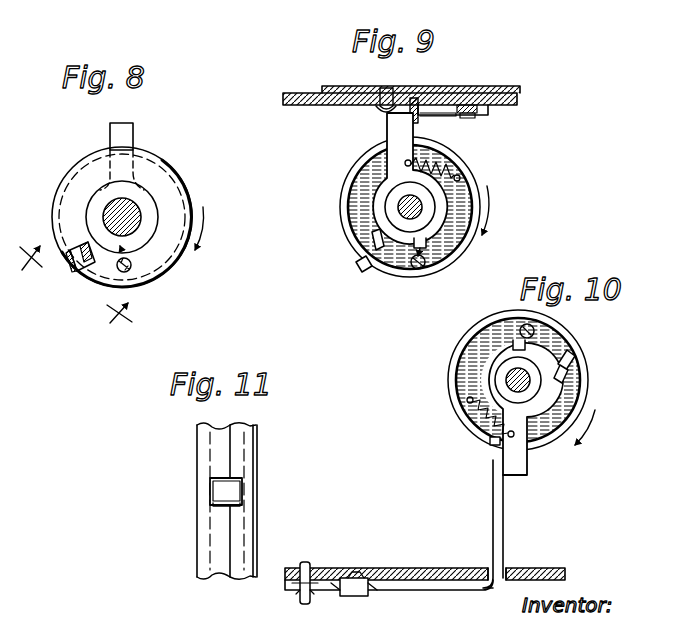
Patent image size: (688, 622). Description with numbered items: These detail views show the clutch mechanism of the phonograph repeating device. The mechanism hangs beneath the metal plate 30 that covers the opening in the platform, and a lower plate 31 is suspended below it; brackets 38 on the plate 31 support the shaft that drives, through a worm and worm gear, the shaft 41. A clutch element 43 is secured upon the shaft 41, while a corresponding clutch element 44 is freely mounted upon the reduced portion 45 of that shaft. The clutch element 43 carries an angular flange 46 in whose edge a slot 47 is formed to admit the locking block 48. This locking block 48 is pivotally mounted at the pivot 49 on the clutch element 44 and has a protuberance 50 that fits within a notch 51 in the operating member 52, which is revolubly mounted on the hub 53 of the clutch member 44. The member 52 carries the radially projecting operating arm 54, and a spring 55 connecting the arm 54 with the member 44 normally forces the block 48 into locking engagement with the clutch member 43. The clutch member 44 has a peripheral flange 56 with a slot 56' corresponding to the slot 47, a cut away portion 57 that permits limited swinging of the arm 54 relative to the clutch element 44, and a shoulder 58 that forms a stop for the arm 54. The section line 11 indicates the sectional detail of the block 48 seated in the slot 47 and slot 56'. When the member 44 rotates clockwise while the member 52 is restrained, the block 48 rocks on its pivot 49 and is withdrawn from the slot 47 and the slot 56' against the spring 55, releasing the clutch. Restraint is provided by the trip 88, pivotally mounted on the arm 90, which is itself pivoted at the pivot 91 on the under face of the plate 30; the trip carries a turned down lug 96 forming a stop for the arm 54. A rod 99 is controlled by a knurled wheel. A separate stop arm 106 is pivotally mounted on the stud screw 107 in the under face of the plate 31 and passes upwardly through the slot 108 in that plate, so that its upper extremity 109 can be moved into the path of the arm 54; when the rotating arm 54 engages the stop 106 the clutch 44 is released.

In FIG. 8, the section line 11 is at (77, 288).
In FIG. 9, the metal plate 30 is at (500, 90).
In FIG. 10, the lower plate 31 is at (453, 568).
In FIG. 9, the brackets 38 is at (440, 118).
In FIG. 8, the shaft 41 is at (133, 207).
In FIG. 11, the clutch element 43 is at (197, 458).
In FIG. 9, the clutch element 44 is at (462, 182).
In FIG. 10, the clutch element 44 is at (518, 380).
In FIG. 11, the clutch element 44 is at (250, 444).
In FIG. 9, the reduced portion 45 is at (418, 205).
In FIG. 10, the reduced portion 45 is at (530, 386).
In FIG. 8, the angular flange 46 is at (85, 156).
In FIG. 11, the slot 47 is at (220, 505).
In FIG. 8, the locking block 48 is at (76, 263).
In FIG. 9, the locking block 48 is at (374, 250).
In FIG. 10, the locking block 48 is at (565, 372).
In FIG. 11, the locking block 48 is at (232, 490).
In FIG. 8, the pivot 49 is at (131, 270).
In FIG. 9, the pivot 49 is at (419, 269).
In FIG. 10, the pivot 49 is at (523, 325).
In FIG. 9, the protuberance 50 is at (425, 243).
In FIG. 10, the protuberance 50 is at (513, 345).
In FIG. 9, the notch 51 is at (490, 222).
In FIG. 9, the operating member 52 is at (436, 207).
In FIG. 9, the hub 53 is at (398, 210).
In FIG. 10, the hub 53 is at (507, 376).
In FIG. 8, the operating arm 54 is at (133, 130).
In FIG. 9, the operating arm 54 is at (387, 125).
In FIG. 10, the operating arm 54 is at (527, 462).
In FIG. 9, the spring 55 is at (440, 164).
In FIG. 10, the spring 55 is at (478, 410).
In FIG. 9, the peripheral flange 56 is at (326, 208).
In FIG. 8, the slot 56' is at (68, 287).
In FIG. 9, the slot 56' is at (356, 281).
In FIG. 10, the slot 56' is at (586, 341).
In FIG. 11, the slot 56' is at (273, 488).
In FIG. 9, the cut away portion 57 is at (354, 170).
In FIG. 10, the cut away portion 57 is at (588, 380).
In FIG. 10, the shoulder 58 is at (490, 441).
In FIG. 9, the trip 88 is at (488, 108).
In FIG. 9, the arm 90 is at (292, 92).
In FIG. 9, the pivot 91 is at (390, 86).
In FIG. 9, the turned down lug 96 is at (418, 118).
In FIG. 10, the rod 99 is at (308, 564).
In FIG. 10, the stop arm 106 is at (410, 585).
In FIG. 10, the stud screw 107 is at (342, 597).
In FIG. 10, the slot 108 is at (506, 574).
In FIG. 10, the upper extremity 109 is at (503, 505).